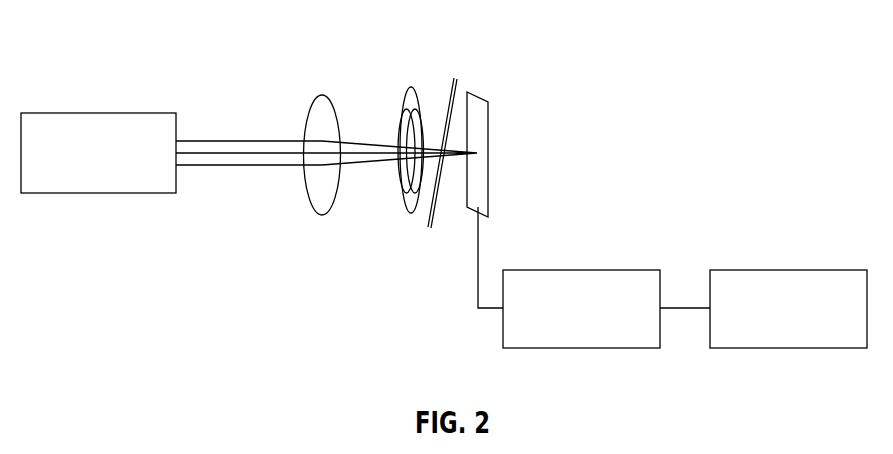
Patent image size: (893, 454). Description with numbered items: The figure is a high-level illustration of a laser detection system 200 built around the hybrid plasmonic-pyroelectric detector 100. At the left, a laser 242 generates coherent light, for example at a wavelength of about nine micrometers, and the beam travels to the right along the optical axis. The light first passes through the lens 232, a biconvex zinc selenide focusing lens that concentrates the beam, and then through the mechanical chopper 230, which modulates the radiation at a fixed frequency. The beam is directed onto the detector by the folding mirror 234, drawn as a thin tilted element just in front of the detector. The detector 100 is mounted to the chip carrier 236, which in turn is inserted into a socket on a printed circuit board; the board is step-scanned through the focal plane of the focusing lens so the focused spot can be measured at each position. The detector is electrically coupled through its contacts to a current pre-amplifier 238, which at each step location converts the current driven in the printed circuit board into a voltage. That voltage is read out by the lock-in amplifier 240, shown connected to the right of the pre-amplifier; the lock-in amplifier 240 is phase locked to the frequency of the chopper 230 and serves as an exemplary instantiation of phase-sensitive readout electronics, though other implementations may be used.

The laser detection system 200 is at (703, 40).
The laser 242 is at (86, 112).
The lens 232 is at (322, 95).
The mechanical chopper 230 is at (412, 85).
The folding mirror 234 is at (455, 78).
The hybrid plasmonic-pyroelectric detector 100 is at (505, 155).
The chip carrier 236 is at (490, 215).
The current pre-amplifier 238 is at (597, 270).
The lock-in amplifier 240 is at (803, 270).